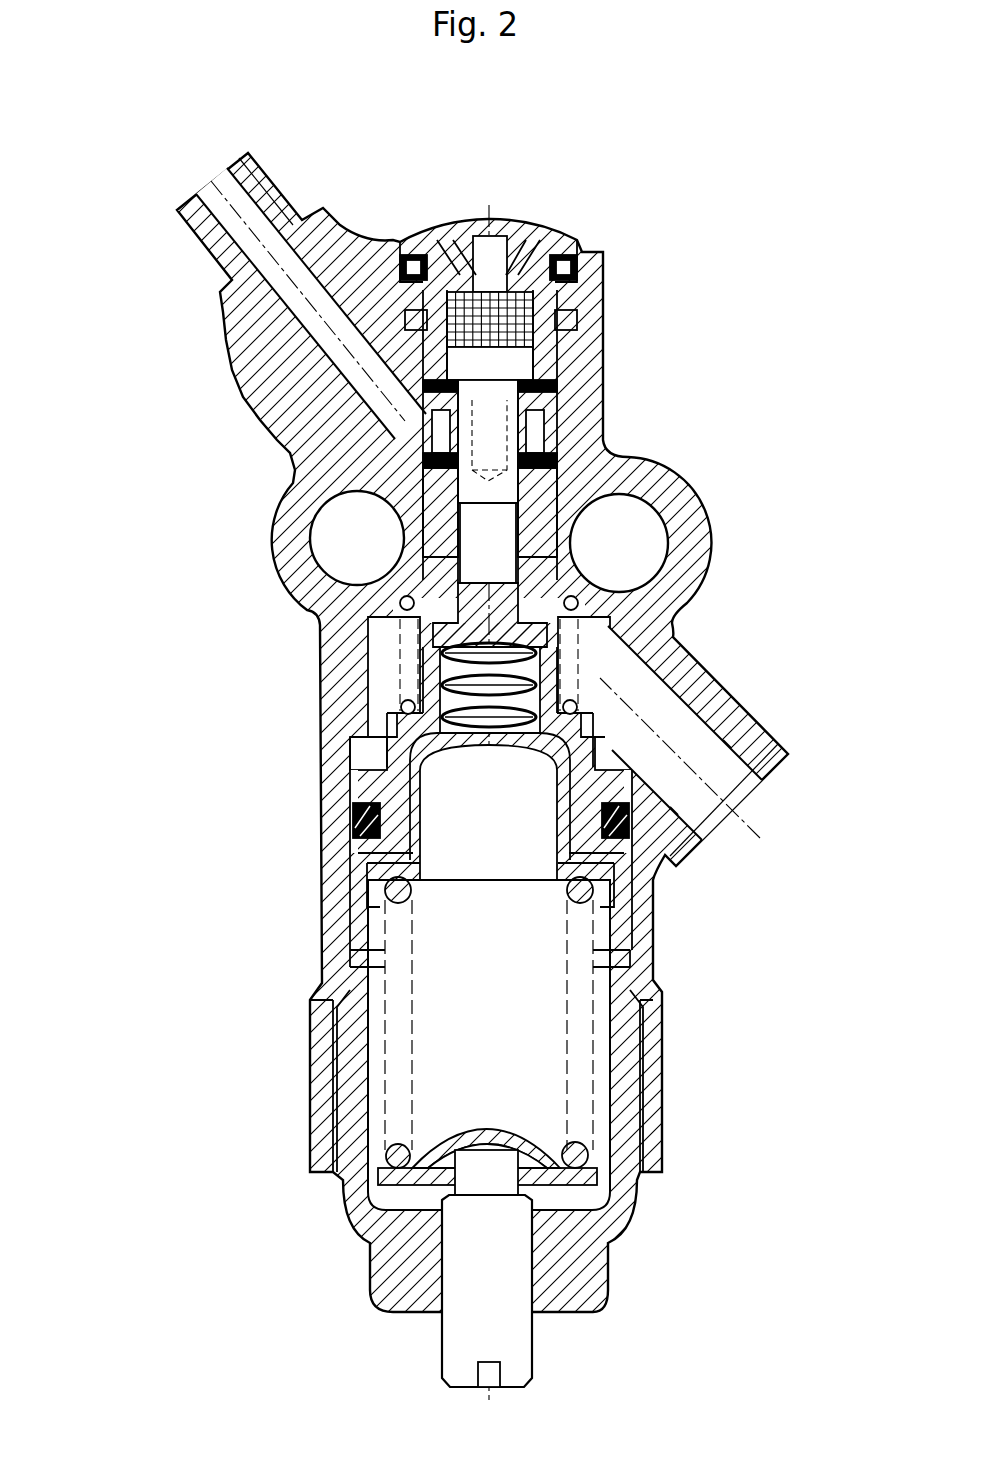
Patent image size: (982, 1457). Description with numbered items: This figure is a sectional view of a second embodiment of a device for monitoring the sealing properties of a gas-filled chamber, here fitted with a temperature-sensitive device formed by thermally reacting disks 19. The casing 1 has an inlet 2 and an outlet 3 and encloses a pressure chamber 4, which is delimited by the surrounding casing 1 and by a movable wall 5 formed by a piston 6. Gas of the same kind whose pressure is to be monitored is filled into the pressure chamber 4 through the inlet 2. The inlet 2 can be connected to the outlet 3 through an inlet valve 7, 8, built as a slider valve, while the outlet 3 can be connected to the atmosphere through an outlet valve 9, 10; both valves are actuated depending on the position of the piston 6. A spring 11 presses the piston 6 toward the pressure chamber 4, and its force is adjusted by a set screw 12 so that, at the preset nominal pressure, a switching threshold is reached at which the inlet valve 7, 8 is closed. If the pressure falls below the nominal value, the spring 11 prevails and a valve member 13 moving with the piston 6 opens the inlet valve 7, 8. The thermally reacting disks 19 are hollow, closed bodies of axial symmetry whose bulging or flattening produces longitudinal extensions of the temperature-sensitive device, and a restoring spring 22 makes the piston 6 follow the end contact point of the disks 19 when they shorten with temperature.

The casing 1 is at (320, 1134).
The inlet 2 is at (713, 819).
The outlet 3 is at (240, 203).
The pressure chamber 4 is at (385, 635).
The movable wall 5 is at (412, 614).
The piston 6 is at (368, 847).
The inlet valve 7 is at (547, 462).
The inlet valve 8 is at (547, 495).
The outlet valve 9 is at (462, 432).
The outlet valve 10 is at (495, 385).
The spring 11 is at (400, 1014).
The set screw 12 is at (463, 1355).
The valve member 13 is at (424, 494).
The thermally reacting disks 19 is at (600, 690).
The restoring spring 22 is at (400, 682).